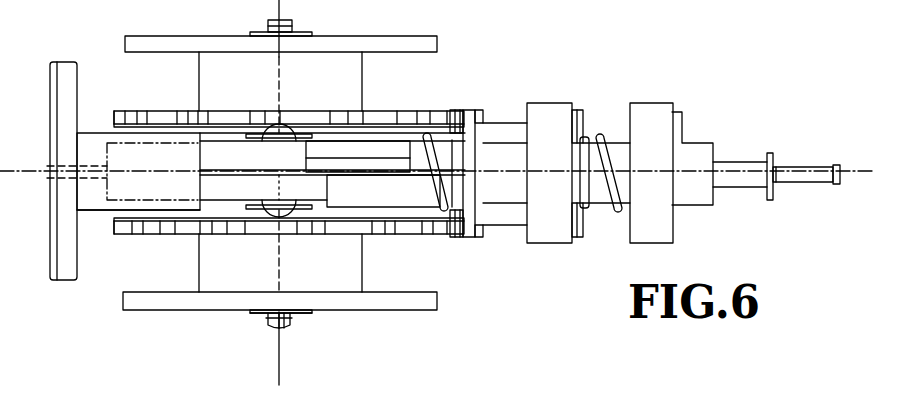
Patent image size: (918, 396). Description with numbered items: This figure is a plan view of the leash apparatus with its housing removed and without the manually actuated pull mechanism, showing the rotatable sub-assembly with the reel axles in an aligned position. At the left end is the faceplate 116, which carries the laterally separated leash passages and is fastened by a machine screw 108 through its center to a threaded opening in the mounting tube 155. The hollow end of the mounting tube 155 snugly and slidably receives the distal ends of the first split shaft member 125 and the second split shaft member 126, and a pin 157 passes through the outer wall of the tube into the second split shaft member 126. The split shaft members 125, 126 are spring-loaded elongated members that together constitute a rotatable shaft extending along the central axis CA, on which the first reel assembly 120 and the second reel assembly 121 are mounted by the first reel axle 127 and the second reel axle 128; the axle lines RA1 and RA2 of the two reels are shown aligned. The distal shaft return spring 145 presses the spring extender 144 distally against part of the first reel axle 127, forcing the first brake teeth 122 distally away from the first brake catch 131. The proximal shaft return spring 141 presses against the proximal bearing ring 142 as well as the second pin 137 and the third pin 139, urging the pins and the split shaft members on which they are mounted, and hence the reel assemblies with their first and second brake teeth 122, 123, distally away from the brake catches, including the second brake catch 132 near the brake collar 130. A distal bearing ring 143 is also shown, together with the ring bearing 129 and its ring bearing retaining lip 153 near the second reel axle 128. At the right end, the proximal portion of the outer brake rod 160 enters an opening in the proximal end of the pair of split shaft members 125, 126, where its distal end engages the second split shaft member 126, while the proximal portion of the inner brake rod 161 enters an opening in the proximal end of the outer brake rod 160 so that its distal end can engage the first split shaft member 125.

The machine screw 108 is at (88, 172).
The faceplate 116 is at (66, 72).
The first reel assembly 120 is at (362, 76).
The second reel assembly 121 is at (362, 262).
The first brake teeth 122 is at (188, 112).
The second brake teeth 123 is at (235, 228).
The first split shaft member 125 is at (452, 160).
The second split shaft member 126 is at (428, 190).
The first reel axle 127 is at (285, 13).
The second reel axle 128 is at (288, 326).
The ring bearing 129 is at (256, 313).
The brake collar 130 is at (500, 128).
The first brake catch 131 is at (455, 112).
The second brake catch 132 is at (456, 237).
The second pin 137 is at (578, 225).
The third pin 139 is at (578, 128).
The proximal shaft return spring 141 is at (600, 132).
The proximal bearing ring 142 is at (672, 228).
The distal bearing ring 143 is at (542, 240).
The spring extender 144 is at (338, 153).
The distal shaft return spring 145 is at (430, 144).
The ring bearing retaining lip 153 is at (268, 325).
The mounting tube 155 is at (96, 205).
The pin 157 is at (148, 190).
The outer brake rod 160 is at (742, 165).
The inner brake rod 161 is at (805, 179).
The central axis CA is at (16, 178).
The rotation axis 1 RA1 is at (279, 14).
The rotation axis 2 RA2 is at (282, 372).